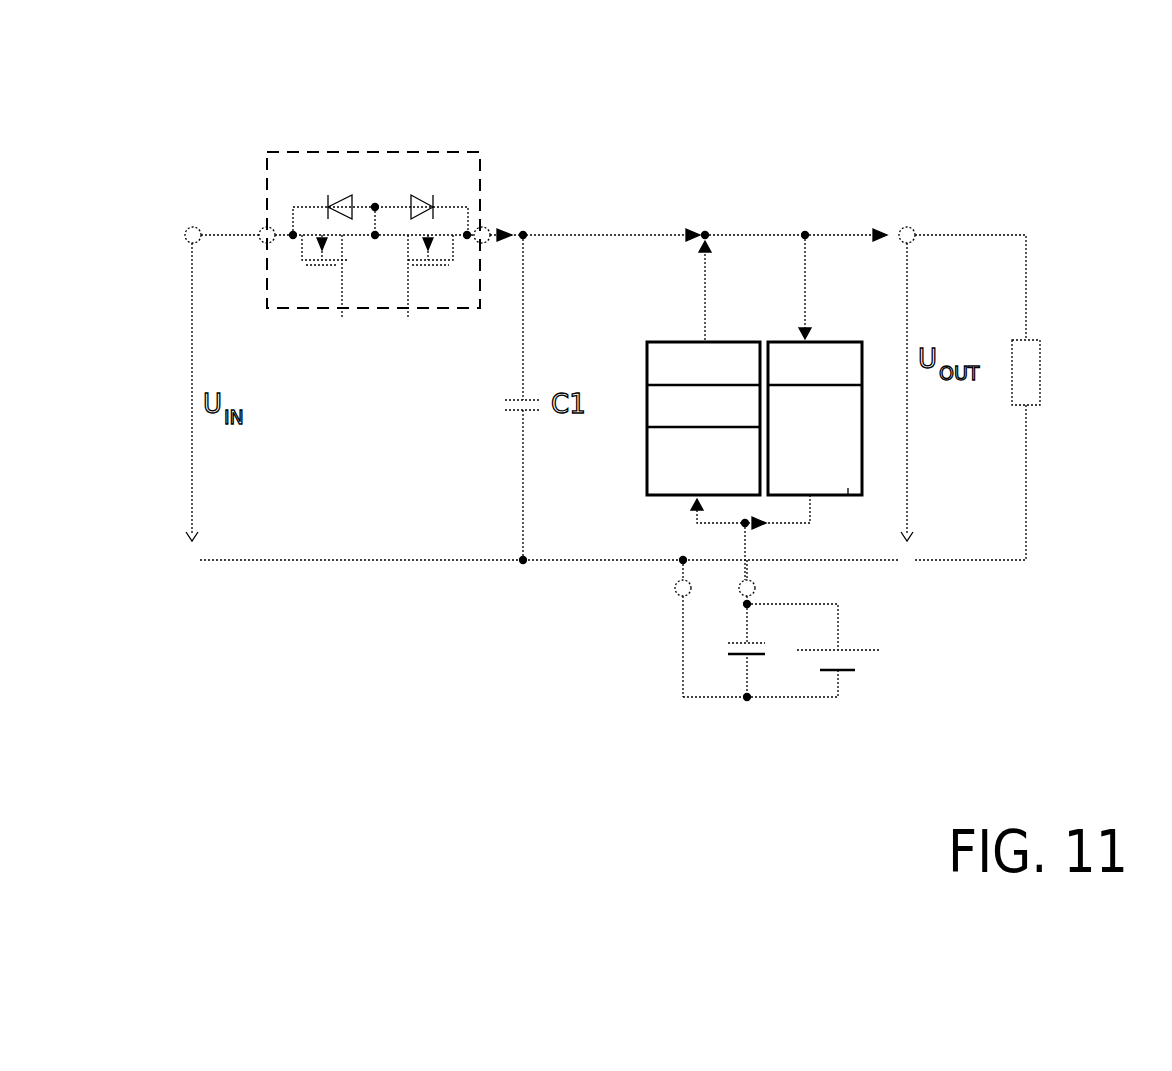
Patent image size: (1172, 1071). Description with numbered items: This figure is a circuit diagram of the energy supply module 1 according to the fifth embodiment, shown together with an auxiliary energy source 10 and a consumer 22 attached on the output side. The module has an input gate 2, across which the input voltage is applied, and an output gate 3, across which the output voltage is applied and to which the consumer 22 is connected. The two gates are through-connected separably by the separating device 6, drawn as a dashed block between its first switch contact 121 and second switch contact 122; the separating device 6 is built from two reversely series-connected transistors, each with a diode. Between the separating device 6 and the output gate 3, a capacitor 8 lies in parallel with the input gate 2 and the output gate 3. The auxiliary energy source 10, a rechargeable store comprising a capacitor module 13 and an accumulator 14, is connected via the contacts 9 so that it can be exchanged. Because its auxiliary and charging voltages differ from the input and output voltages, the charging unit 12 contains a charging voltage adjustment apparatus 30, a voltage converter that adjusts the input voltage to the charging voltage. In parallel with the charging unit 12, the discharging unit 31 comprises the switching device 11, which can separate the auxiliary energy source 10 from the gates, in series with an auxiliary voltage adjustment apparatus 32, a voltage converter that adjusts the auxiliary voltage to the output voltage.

The energy supply module 1 is at (838, 176).
The input gate 2 is at (201, 224).
The output gate 3 is at (903, 218).
The separating device 6 is at (420, 150).
The capacitor 8 is at (532, 400).
The contacts 9 is at (683, 597).
The auxiliary energy source 10 is at (805, 708).
The switching device 11 is at (647, 495).
The charging unit 12 is at (783, 340).
The capacitor module 13 is at (738, 655).
The accumulator 14 is at (848, 665).
The consumer 22 is at (1025, 352).
The charging voltage adjustment apparatus 30 is at (848, 488).
The discharging unit 31 is at (662, 330).
The auxiliary voltage adjustment apparatus 32 is at (652, 415).
The first switch contact 121 is at (267, 226).
The second switch contact 122 is at (485, 226).